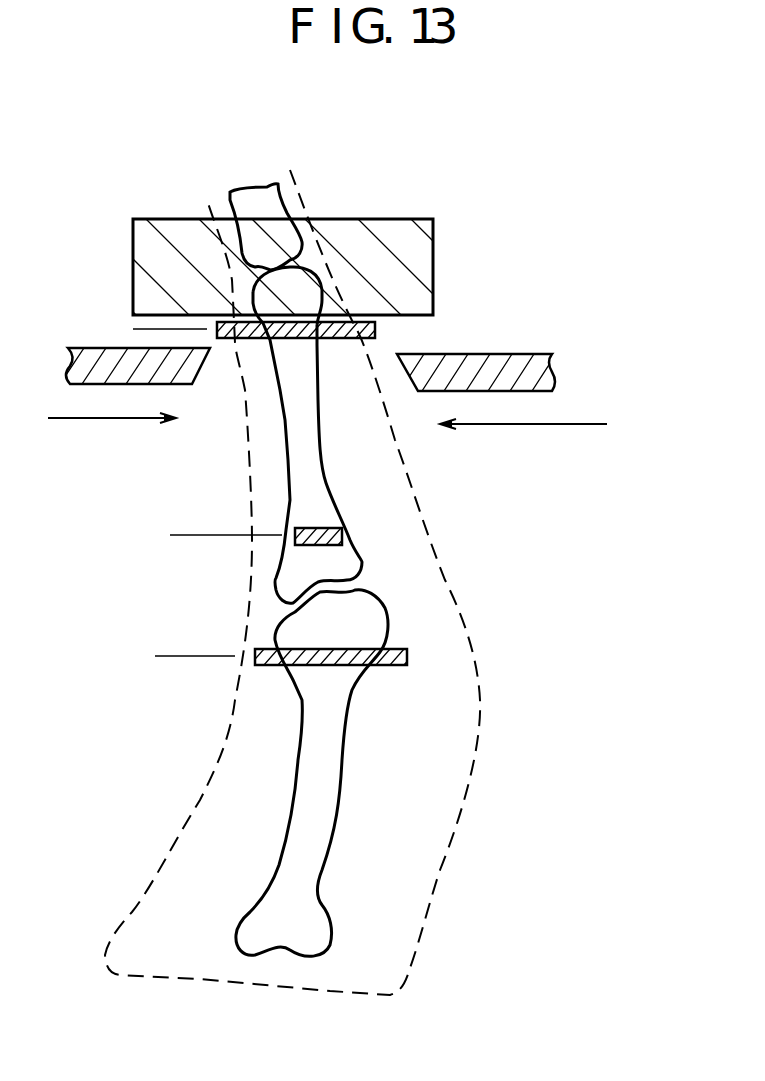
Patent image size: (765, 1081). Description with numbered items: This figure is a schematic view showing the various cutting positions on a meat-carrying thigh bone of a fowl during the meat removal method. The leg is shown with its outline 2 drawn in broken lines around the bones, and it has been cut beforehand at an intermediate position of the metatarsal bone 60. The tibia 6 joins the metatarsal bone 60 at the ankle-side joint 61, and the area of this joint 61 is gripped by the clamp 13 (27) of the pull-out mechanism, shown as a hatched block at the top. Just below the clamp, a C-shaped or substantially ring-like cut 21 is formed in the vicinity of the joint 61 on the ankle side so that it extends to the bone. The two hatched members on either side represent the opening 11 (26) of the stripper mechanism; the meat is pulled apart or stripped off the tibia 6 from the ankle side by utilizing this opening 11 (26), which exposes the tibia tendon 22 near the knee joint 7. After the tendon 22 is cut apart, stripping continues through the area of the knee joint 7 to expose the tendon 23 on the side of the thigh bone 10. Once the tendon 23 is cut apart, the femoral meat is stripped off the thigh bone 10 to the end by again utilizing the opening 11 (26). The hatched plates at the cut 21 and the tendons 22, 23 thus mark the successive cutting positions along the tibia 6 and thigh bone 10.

The leg (body) outline 2 is at (366, 315).
The tibia 6 is at (327, 480).
The knee joint 7 is at (368, 578).
The thigh bone 10 is at (323, 815).
The opening 11 is at (363, 369).
The opening 26 is at (552, 370).
The clamp 13 is at (271, 254).
The clamp 27 is at (433, 225).
The cut 21 is at (375, 330).
The tibia tendon 22 is at (355, 535).
The tendon 23 is at (415, 658).
The metatarsal bone 60 is at (268, 201).
The joint 61 is at (335, 284).